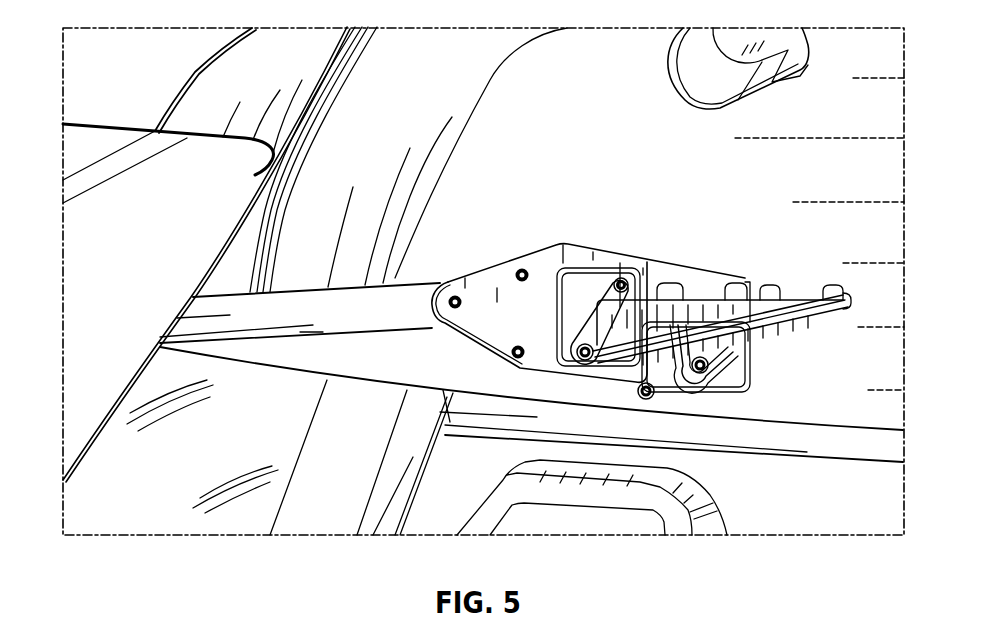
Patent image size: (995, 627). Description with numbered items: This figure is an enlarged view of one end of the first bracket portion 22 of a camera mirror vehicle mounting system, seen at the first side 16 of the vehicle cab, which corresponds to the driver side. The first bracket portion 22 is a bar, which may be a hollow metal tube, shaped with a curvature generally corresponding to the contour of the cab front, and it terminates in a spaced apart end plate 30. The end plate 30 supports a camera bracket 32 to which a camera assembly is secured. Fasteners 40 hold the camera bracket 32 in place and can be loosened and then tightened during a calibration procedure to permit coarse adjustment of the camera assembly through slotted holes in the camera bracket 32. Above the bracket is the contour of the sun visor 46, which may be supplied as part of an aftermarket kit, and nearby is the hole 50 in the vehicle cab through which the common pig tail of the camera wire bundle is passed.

The first side 16 is at (850, 377).
The first bracket portion 22 is at (299, 282).
The end plate 30 is at (482, 287).
The camera bracket 32 is at (795, 300).
The fastener 40 is at (587, 345).
The sun visor 46 is at (280, 163).
The hole 50 is at (652, 393).